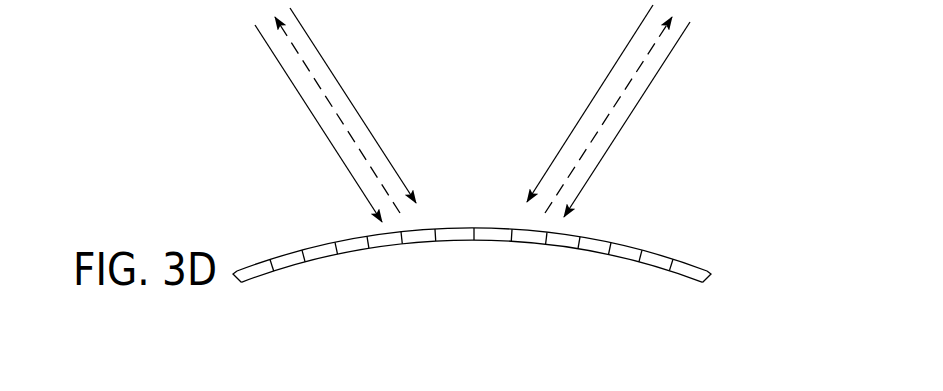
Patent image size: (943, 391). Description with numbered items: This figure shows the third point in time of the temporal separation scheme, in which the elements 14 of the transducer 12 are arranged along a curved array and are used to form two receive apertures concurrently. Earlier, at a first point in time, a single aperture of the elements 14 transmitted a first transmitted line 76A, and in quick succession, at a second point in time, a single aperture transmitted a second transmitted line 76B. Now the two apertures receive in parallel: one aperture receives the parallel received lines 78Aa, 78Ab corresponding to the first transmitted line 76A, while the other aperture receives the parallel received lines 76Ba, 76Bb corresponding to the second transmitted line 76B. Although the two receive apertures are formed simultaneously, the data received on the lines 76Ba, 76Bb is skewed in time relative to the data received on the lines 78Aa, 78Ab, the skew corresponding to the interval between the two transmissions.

The transducer 12 is at (656, 290).
The elements 14 is at (498, 251).
The first transmitted line 76A is at (626, 84).
The second transmitted line 76B is at (318, 86).
The parallel received line 76Ba is at (321, 132).
The parallel received line 76Bb is at (364, 118).
The parallel received line 78Aa is at (581, 118).
The parallel received line 78Ab is at (623, 129).